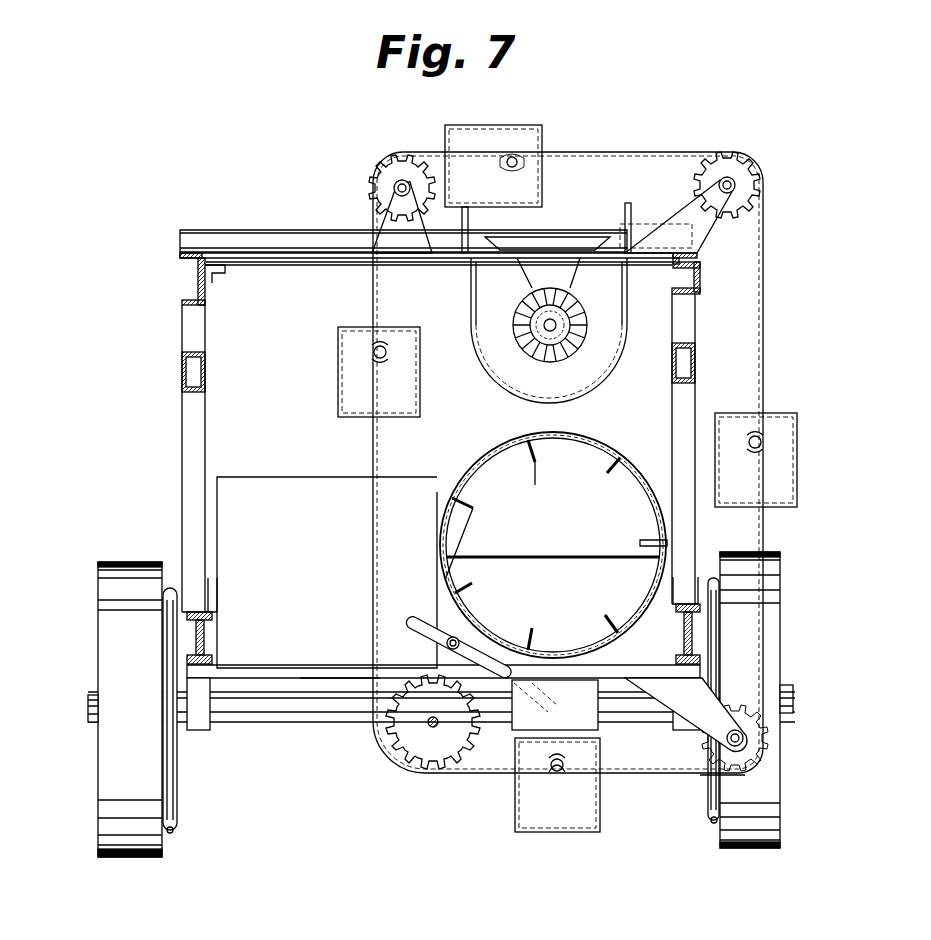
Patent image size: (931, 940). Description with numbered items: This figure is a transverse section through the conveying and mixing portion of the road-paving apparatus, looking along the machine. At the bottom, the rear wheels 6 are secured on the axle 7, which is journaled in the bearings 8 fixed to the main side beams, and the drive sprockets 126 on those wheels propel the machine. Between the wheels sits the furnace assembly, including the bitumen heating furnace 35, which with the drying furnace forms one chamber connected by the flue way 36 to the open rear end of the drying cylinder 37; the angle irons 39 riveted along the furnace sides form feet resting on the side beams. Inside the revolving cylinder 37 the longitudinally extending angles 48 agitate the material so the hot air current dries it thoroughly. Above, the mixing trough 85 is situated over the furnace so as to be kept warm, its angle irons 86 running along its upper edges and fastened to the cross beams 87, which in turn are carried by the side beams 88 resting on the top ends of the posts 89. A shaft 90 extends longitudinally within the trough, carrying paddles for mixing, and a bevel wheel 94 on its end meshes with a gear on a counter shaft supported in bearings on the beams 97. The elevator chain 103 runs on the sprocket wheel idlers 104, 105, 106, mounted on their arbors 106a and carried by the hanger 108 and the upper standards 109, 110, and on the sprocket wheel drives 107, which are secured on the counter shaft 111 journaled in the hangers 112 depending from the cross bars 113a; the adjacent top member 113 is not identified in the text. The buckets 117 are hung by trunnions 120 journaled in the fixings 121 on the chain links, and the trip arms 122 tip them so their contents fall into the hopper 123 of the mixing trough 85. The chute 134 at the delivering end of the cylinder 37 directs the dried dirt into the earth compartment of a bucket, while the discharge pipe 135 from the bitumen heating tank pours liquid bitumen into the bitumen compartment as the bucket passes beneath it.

The rear wheel 6 is at (165, 822).
The axle 7 is at (90, 712).
The bearing 8 is at (200, 725).
The bitumen heating furnace 35 is at (327, 572).
The flue way 36 is at (598, 522).
The drying cylinder 37 is at (582, 436).
The angle iron 39 is at (210, 580).
The longitudinally extending angle 48 is at (606, 472).
The mixing trough 85 is at (510, 372).
The angle iron 86 is at (471, 268).
The cross beam 87 is at (232, 240).
The side beam 88 is at (199, 280).
The post 89 is at (190, 330).
The shaft 90 is at (544, 324).
The bevel wheel 94 is at (580, 320).
The beam 97 is at (193, 367).
The elevator chain 103 is at (764, 333).
The sprocket wheel idler 104 is at (723, 753).
The sprocket wheel idler 105 is at (748, 172).
The sprocket wheel idler 106 is at (393, 178).
The arbor 106a is at (402, 180).
The sprocket wheel drive 107 is at (415, 752).
The hanger 108 is at (700, 692).
The upper standard 109 is at (690, 218).
The upper standard 110 is at (402, 217).
The counter shaft 111 is at (425, 722).
The hanger 112 is at (322, 672).
The top plate 113 is at (333, 265).
The cross bar 113a is at (322, 678).
The bucket 117 is at (515, 135).
The trunnion 120 is at (520, 158).
The fixing 121 is at (386, 352).
The trip arm 122 is at (468, 215).
The hopper 123 is at (528, 240).
The drive sprocket 126 is at (120, 805).
The chute 134 is at (555, 705).
The discharge pipe 135 is at (440, 648).